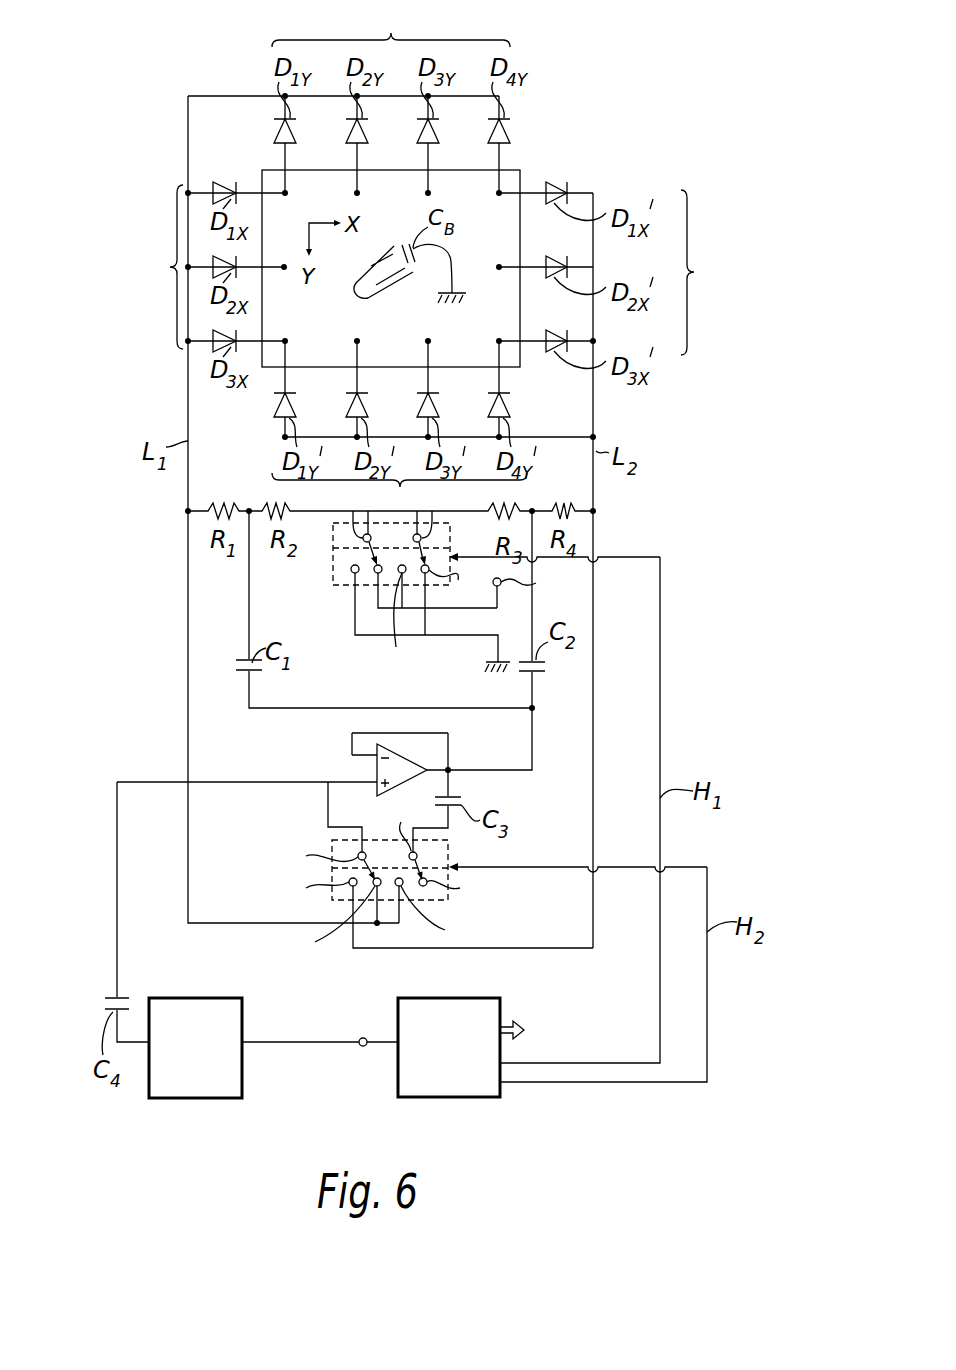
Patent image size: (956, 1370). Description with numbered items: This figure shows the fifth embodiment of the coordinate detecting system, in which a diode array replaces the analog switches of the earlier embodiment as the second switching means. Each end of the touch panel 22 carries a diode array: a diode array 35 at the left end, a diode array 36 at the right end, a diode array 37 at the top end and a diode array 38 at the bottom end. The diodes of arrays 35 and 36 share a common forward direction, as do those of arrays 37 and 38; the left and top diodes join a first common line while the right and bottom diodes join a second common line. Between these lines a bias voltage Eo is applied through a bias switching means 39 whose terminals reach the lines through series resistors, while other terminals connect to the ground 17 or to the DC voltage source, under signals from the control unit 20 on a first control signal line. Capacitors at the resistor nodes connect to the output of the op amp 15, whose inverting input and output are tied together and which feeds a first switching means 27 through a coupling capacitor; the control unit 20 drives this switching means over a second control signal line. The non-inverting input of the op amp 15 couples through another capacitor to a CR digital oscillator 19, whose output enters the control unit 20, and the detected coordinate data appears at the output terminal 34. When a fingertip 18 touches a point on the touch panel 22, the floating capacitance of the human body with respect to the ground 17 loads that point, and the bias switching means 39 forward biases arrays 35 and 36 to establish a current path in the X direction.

The diode array 37 is at (391, 71).
The touch panel 22 is at (513, 181).
The diode array 35 is at (184, 267).
The diode array 36 is at (640, 268).
The diode array 38 is at (399, 454).
The fingertip 18 is at (407, 278).
The ground 17 is at (452, 303).
The bias switching means 39 is at (332, 538).
The op amp 15 is at (420, 762).
The first switching means 27 is at (450, 855).
The control unit 20 is at (483, 998).
The output terminal 34 is at (507, 1024).
The CR digital oscillator 19 is at (243, 1085).